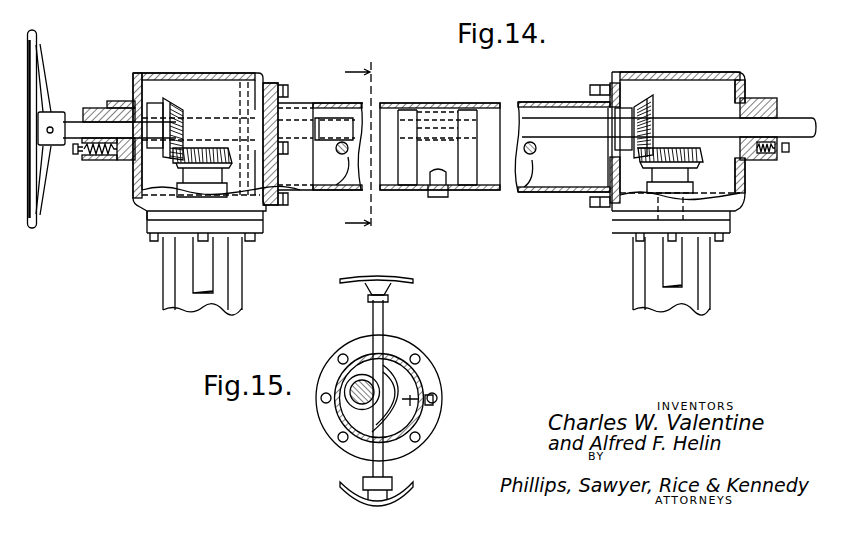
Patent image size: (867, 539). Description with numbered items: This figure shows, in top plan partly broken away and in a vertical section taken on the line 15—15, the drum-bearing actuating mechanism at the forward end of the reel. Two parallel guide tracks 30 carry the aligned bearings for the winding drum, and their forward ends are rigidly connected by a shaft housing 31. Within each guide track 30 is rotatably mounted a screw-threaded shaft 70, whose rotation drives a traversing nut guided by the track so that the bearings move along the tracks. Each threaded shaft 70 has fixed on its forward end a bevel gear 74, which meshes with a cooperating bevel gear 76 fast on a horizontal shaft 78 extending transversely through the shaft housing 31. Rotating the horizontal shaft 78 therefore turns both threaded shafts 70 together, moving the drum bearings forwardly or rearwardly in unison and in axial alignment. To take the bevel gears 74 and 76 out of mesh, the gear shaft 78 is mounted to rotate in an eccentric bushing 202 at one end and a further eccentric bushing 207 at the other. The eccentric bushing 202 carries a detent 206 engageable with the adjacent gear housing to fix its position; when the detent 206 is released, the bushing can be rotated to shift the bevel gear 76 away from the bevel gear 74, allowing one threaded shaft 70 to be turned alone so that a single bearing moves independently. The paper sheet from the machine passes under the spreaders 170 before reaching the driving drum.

In FIG. 14, the section line 15- 15 is at (368, 151).
In FIG. 14, the guide track 30 is at (238, 294).
In FIG. 14, the shaft housing 31 is at (296, 103).
In FIG. 15, the shaft housing 31 is at (418, 377).
In FIG. 14, the screw-threaded shaft 70 is at (205, 267).
In FIG. 14, the bevel gear 74 is at (199, 148).
In FIG. 14, the bevel gear 76 is at (181, 104).
In FIG. 14, the horizontal shaft 78 is at (334, 134).
In FIG. 15, the horizontal shaft 78 is at (352, 403).
In FIG. 14, the spreader 170 is at (346, 160).
In FIG. 15, the spreader 170 is at (410, 490).
In FIG. 14, the eccentric bushing 202 is at (93, 107).
In FIG. 14, the detent 206 is at (78, 155).
In FIG. 14, the bearing boss 207 is at (768, 98).